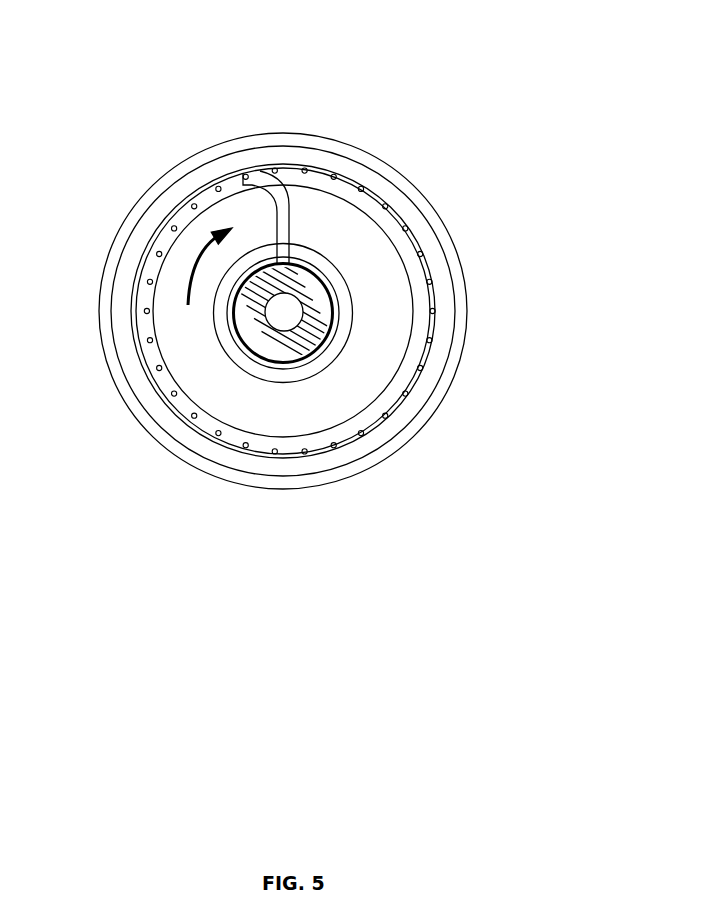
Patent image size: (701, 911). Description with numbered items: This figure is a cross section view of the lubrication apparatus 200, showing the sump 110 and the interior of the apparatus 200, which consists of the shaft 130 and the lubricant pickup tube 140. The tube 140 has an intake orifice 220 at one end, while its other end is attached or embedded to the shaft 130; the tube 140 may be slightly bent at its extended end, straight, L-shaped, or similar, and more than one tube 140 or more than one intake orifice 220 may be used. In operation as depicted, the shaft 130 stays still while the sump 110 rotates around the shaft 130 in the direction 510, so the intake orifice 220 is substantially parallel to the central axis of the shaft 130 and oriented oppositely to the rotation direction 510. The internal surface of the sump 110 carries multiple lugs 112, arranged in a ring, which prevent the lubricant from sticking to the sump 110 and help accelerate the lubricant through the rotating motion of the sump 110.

The lubrication apparatus 200 is at (602, 35).
The sump 110 is at (179, 182).
The lugs 112 is at (158, 419).
The shaft 130 is at (307, 332).
The lubricant pickup tube 140 is at (283, 210).
The intake orifice 220 is at (231, 170).
The rotation direction 510 is at (190, 250).